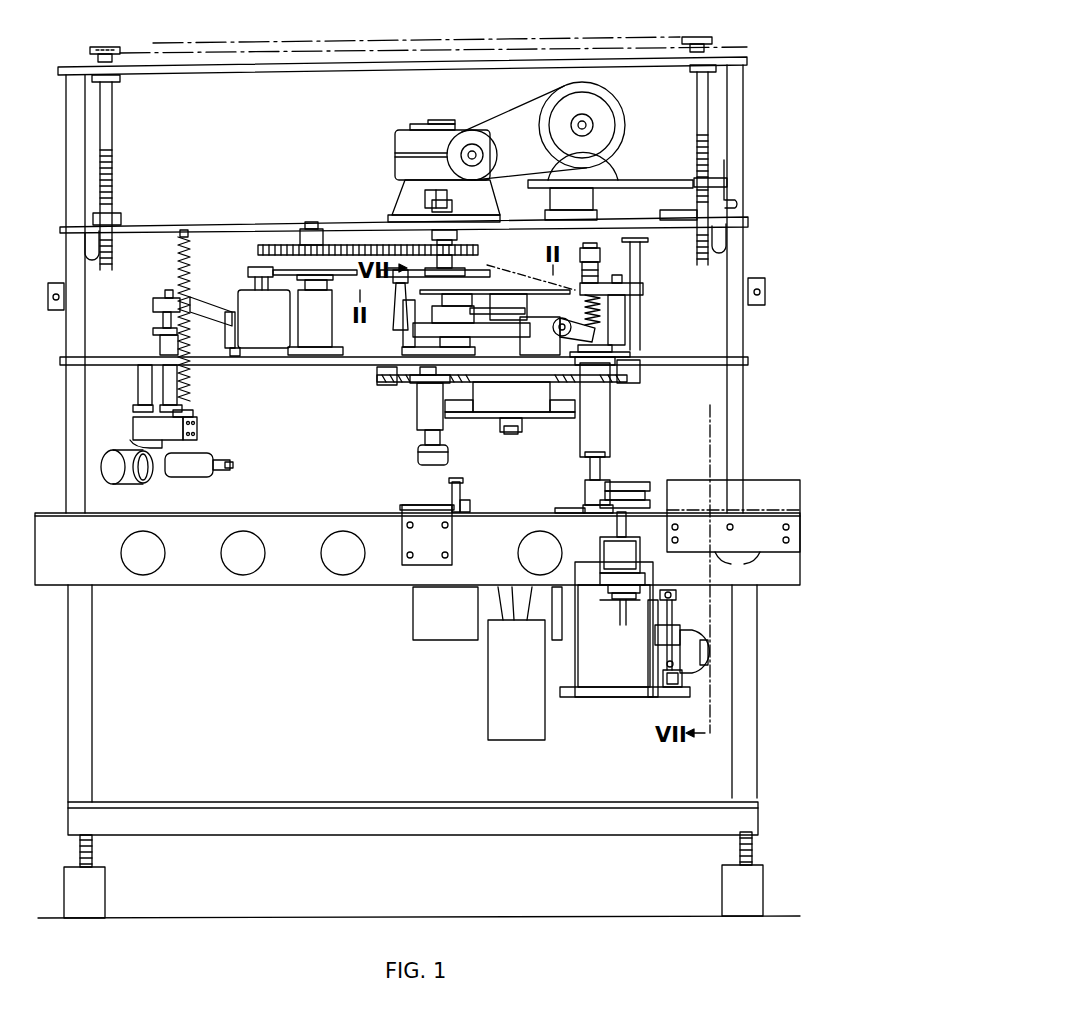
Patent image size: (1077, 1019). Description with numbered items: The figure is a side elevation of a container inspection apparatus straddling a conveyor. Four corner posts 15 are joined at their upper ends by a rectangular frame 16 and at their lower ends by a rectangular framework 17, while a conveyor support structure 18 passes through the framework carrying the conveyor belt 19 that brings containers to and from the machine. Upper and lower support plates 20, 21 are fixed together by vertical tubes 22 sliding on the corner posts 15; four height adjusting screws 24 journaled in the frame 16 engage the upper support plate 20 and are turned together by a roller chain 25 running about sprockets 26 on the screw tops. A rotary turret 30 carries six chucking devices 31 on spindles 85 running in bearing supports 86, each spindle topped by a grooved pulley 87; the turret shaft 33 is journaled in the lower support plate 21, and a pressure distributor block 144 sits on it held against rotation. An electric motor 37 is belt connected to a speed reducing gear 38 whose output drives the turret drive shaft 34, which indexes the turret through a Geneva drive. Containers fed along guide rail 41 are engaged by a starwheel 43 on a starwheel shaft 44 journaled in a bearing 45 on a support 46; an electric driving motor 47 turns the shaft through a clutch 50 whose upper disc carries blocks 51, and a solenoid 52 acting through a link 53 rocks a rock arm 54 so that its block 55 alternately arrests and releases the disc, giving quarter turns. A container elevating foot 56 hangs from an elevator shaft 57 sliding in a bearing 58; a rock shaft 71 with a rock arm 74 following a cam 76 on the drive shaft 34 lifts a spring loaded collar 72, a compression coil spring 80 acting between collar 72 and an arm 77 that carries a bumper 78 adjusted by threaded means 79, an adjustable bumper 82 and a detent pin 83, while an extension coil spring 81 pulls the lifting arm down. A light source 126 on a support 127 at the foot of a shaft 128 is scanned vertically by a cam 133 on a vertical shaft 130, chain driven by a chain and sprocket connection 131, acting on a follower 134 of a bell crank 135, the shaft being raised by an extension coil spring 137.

The corner posts 15 is at (66, 110).
The rectangular frame 16 is at (193, 72).
The rectangular framework 17 is at (180, 802).
The conveyor support structure 18 is at (196, 586).
The conveyor belt 19 is at (192, 513).
The upper support plate 20 is at (195, 228).
The lower support plate 21 is at (228, 366).
The vertical tubes 22 is at (66, 258).
The height adjusting screws 24 is at (112, 110).
The roller chain 25 is at (156, 46).
The sprockets 26 is at (110, 47).
The rotary turret 30 is at (503, 430).
The chucking devices 31 is at (418, 457).
The turret shaft 33 is at (518, 430).
The turret drive shaft 34 is at (437, 200).
The electric motor 37 is at (618, 106).
The speed reducing gear 38 is at (405, 132).
The guide rail 41 is at (770, 488).
The starwheel 43 is at (642, 485).
The starwheel shaft 44 is at (626, 524).
The bearing 45 is at (610, 548).
The support 46 is at (618, 648).
The electric driving motor 47 is at (690, 640).
The clutch 50 is at (615, 598).
The blocks 51 is at (620, 605).
The solenoid 52 is at (682, 687).
The link 53 is at (672, 616).
The rock arm 54 is at (676, 596).
The block 55 is at (640, 585).
The container elevating foot 56 is at (580, 508).
The elevator shaft 57 is at (590, 468).
The bearing 58 is at (592, 442).
The rock shaft 71 is at (508, 335).
The spring loaded collar 72 is at (612, 348).
The rock arm 74 is at (396, 322).
The cam 76 is at (470, 270).
The arm 77 is at (643, 285).
The bumper 78 is at (591, 240).
The threaded means 79 is at (598, 275).
The compression coil spring 80 is at (590, 308).
The extension coil spring 81 is at (556, 322).
The adjustable bumper 82 is at (640, 320).
The spring pressed detent pin 83 is at (625, 310).
The spindles 85 is at (425, 438).
The bearing supports 86 is at (417, 415).
The grooved pulley 87 is at (415, 388).
The light source 126 is at (205, 460).
The support 127 is at (142, 430).
The shaft 128 is at (190, 412).
The vertical shaft 130 is at (312, 229).
The chain and sprocket connection 131 is at (343, 245).
The cam 133 is at (283, 270).
The follower 134 is at (250, 268).
The bell crank 135 is at (222, 310).
The extension coil spring 137 is at (178, 254).
The pressure distributor block 144 is at (508, 389).